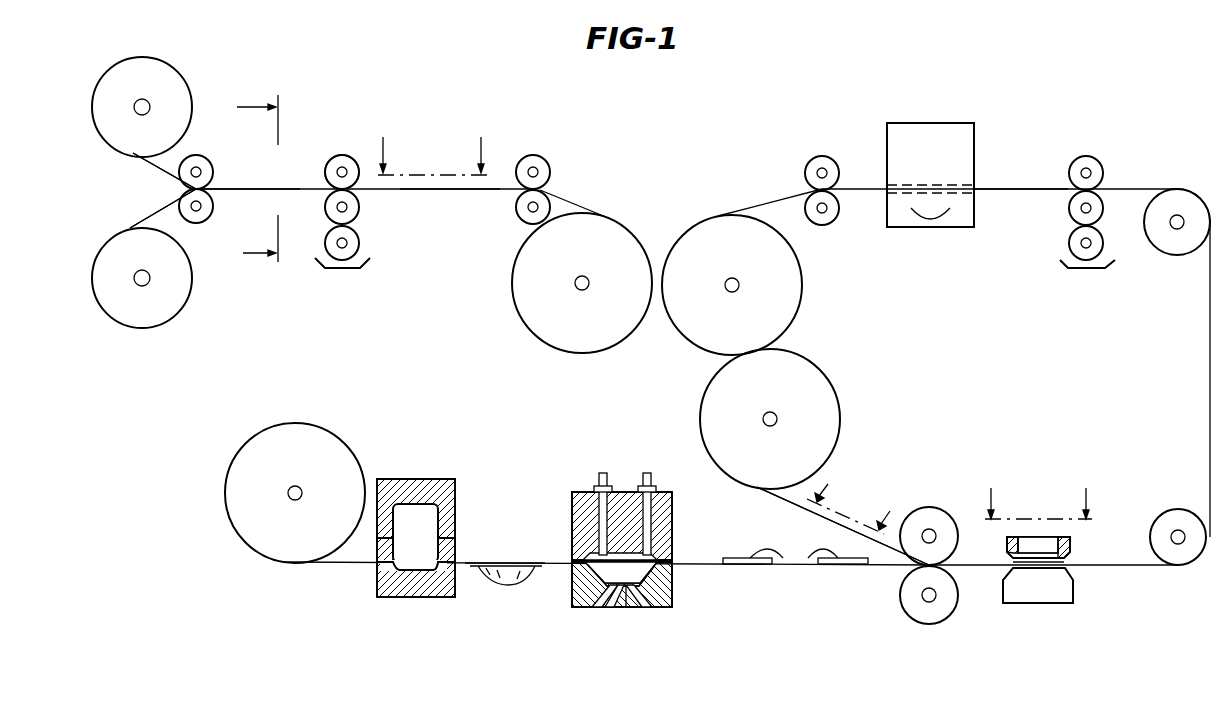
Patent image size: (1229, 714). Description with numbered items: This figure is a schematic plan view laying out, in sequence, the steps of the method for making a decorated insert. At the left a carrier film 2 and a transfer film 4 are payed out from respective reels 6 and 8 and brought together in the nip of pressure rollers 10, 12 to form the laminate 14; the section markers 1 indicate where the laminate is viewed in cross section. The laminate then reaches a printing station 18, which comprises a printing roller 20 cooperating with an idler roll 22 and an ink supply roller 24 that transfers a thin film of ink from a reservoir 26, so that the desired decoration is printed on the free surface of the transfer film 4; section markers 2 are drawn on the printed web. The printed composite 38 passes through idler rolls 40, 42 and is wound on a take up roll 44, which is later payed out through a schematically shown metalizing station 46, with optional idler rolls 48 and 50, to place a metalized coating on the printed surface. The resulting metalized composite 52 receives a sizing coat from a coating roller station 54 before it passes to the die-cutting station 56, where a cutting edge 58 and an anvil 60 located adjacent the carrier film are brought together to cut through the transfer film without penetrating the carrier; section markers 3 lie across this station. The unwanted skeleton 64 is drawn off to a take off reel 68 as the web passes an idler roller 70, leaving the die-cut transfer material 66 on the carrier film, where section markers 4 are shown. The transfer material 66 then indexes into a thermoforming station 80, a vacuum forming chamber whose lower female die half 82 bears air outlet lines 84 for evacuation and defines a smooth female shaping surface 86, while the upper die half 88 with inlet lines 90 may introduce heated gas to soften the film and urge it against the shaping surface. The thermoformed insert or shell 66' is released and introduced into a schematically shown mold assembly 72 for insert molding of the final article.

The section line 1- 1 is at (261, 180).
The carrier film 2 is at (137, 160).
The section line 3- 3 is at (1038, 491).
The transfer film 4 is at (143, 210).
The reel 6 is at (168, 74).
The reel 8 is at (147, 315).
The pressure roller 10 is at (203, 157).
The pressure roller 12 is at (201, 215).
The laminate 14 is at (266, 192).
The printing station 18 is at (353, 148).
The printing roller 20 is at (354, 207).
The idler roll 22 is at (340, 160).
The ink supply roller 24 is at (355, 243).
The reservoir 26 is at (342, 272).
The printed composite 38 is at (445, 192).
The idler roll 40 is at (546, 158).
The idler roll 42 is at (526, 219).
The take up roll 44 is at (570, 343).
The metalizing station 46 is at (925, 118).
The idler roll 48 is at (818, 157).
The idler roll 50 is at (825, 224).
The metalized composite 52 is at (1019, 192).
The coating roller station 54 is at (1098, 152).
The die-cutting station 56 is at (1079, 538).
The cutting edge 58 is at (1030, 548).
The anvil 60 is at (1058, 597).
The skeleton 64 is at (803, 512).
The decorated transfer material 66 is at (795, 574).
The insert or shell 66' is at (528, 561).
The take off reel 68 is at (822, 380).
The idler roller 70 is at (926, 510).
The mold assembly 72 is at (421, 600).
The thermoforming station 80 is at (612, 612).
The female die half 82 is at (665, 590).
The air outlet lines 84 is at (578, 605).
The female shaping surface 86 is at (630, 590).
The upper die half 88 is at (618, 497).
The inlet lines 90 is at (602, 474).